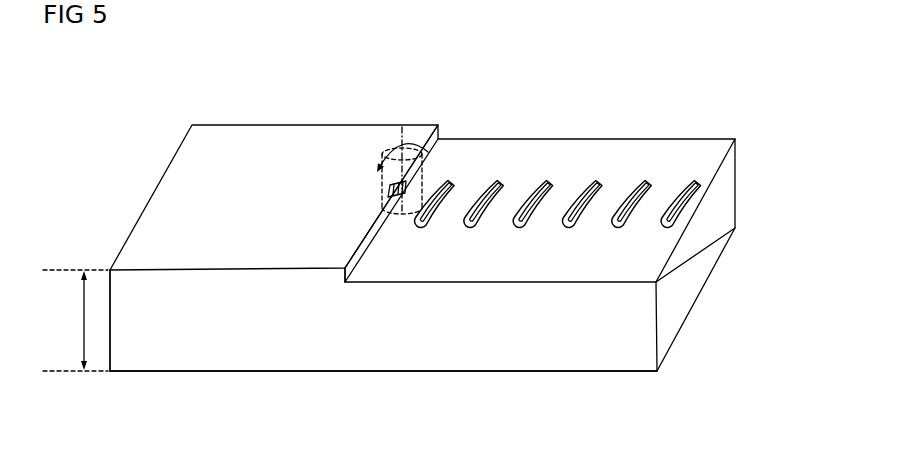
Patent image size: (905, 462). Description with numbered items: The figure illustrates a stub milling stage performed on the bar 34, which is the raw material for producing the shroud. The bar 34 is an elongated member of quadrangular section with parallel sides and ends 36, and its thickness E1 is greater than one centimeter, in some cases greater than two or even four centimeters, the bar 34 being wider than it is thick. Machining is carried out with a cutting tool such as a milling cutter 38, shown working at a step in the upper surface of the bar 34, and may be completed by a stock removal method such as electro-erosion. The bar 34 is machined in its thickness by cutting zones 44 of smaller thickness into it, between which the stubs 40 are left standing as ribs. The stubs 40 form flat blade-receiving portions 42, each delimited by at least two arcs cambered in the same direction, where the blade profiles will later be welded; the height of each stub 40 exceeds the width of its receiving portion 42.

The bar 34 is at (290, 94).
The ends 36 is at (110, 290).
The milling cutter 38 is at (380, 139).
The blade stubs 40 is at (520, 197).
The blade-receiving portions 42 is at (623, 201).
The zones with smaller thicknesses 44 is at (597, 210).
The thickness E1 is at (75, 320).